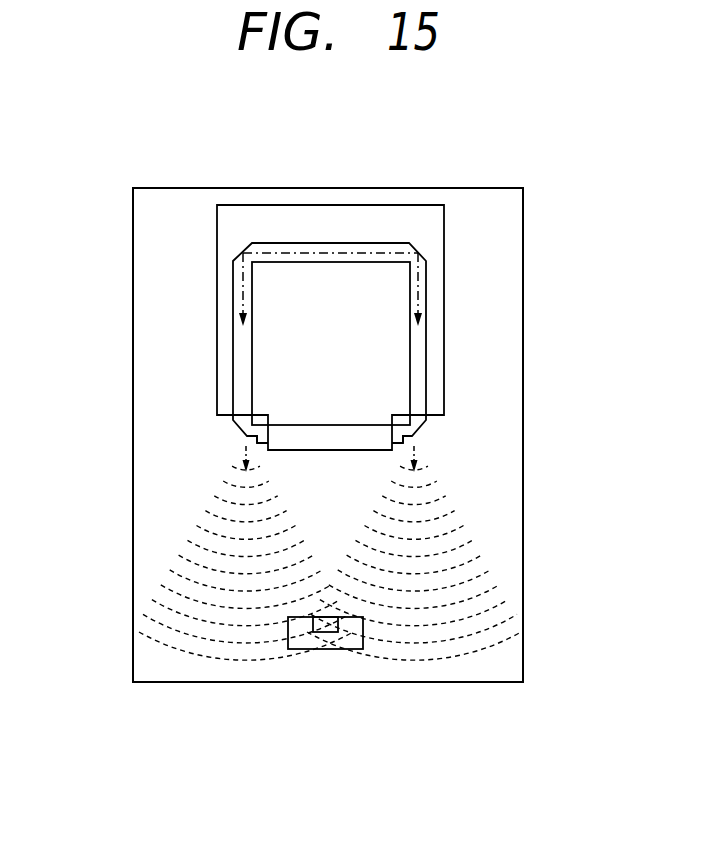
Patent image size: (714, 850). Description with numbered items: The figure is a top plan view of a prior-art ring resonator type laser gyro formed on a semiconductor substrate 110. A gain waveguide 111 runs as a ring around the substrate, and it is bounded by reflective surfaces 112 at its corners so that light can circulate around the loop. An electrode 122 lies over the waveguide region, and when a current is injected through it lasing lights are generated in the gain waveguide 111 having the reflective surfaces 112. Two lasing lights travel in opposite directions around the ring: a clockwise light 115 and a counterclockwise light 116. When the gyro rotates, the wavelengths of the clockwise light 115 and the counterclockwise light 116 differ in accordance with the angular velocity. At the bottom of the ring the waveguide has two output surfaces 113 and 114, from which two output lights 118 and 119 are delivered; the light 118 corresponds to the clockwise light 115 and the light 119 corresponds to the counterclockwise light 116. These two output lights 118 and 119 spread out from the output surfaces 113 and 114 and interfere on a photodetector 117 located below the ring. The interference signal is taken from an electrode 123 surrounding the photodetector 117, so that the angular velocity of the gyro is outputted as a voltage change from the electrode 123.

The semiconductor substrate 110 is at (480, 202).
The gain waveguide 111 is at (300, 250).
The reflective surfaces 112 is at (243, 252).
The output surface 113 is at (416, 437).
The output surface 114 is at (244, 437).
The clockwise light 115 is at (418, 298).
The counterclockwise light 116 is at (243, 292).
The photodetector 117 is at (320, 634).
The output light 118 is at (415, 452).
The output light 119 is at (245, 452).
The electrode 122 is at (377, 210).
The electrode 123 is at (352, 645).